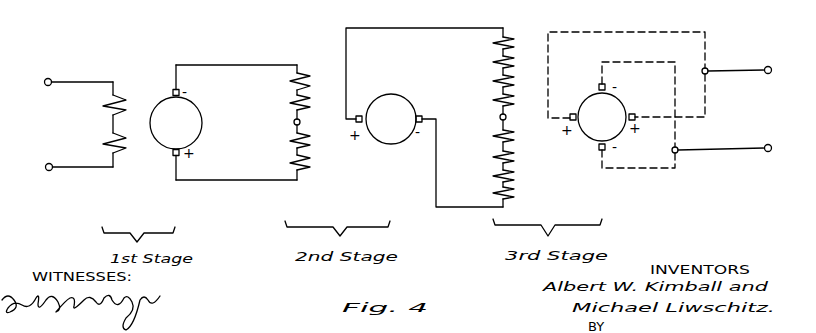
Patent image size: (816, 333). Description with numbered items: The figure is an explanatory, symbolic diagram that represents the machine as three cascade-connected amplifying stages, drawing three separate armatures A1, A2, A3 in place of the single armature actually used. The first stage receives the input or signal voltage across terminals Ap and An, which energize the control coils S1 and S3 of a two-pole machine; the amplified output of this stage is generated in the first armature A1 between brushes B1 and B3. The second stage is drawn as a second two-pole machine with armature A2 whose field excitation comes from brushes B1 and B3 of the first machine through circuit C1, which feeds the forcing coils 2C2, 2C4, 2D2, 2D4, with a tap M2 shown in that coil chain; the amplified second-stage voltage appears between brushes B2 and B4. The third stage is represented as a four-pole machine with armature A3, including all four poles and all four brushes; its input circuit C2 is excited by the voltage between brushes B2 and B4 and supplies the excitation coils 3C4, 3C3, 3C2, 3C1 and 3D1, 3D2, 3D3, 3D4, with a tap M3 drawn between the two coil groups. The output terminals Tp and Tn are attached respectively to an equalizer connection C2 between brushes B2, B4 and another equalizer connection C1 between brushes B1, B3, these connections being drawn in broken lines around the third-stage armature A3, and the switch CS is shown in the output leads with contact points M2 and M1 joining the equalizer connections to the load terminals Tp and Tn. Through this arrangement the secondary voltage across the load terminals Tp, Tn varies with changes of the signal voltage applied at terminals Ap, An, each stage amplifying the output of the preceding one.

The input terminal Ap is at (66, 82).
The input terminal An is at (66, 167).
The control coil S1 is at (104, 107).
The control coil S3 is at (104, 144).
The armature A1 is at (196, 110).
The brush B1 is at (173, 93).
The brush B3 is at (173, 153).
The brush B2 is at (422, 116).
The brush B4 is at (359, 115).
The circuit C1 is at (208, 66).
The input circuit C2 is at (398, 30).
The field coil 2C2 is at (291, 82).
The field coil 2C4 is at (291, 103).
The midpoint tap M2 is at (294, 122).
The field coil 2D2 is at (291, 142).
The field coil 2D4 is at (291, 163).
The armature A2 is at (385, 138).
The coil 3C4 is at (496, 44).
The coil 3C3 is at (496, 62).
The coil 3C2 is at (496, 81).
The coil 3C1 is at (496, 100).
The midpoint tap M3 is at (500, 117).
The coil 3D1 is at (496, 137).
The coil 3D2 is at (496, 157).
The coil 3D3 is at (496, 176).
The coil 3D4 is at (496, 193).
The armature A3 is at (583, 130).
The switch CS is at (750, 68).
The load terminal Tp is at (766, 60).
The load terminal Tn is at (765, 159).
The connection point M1 is at (678, 153).